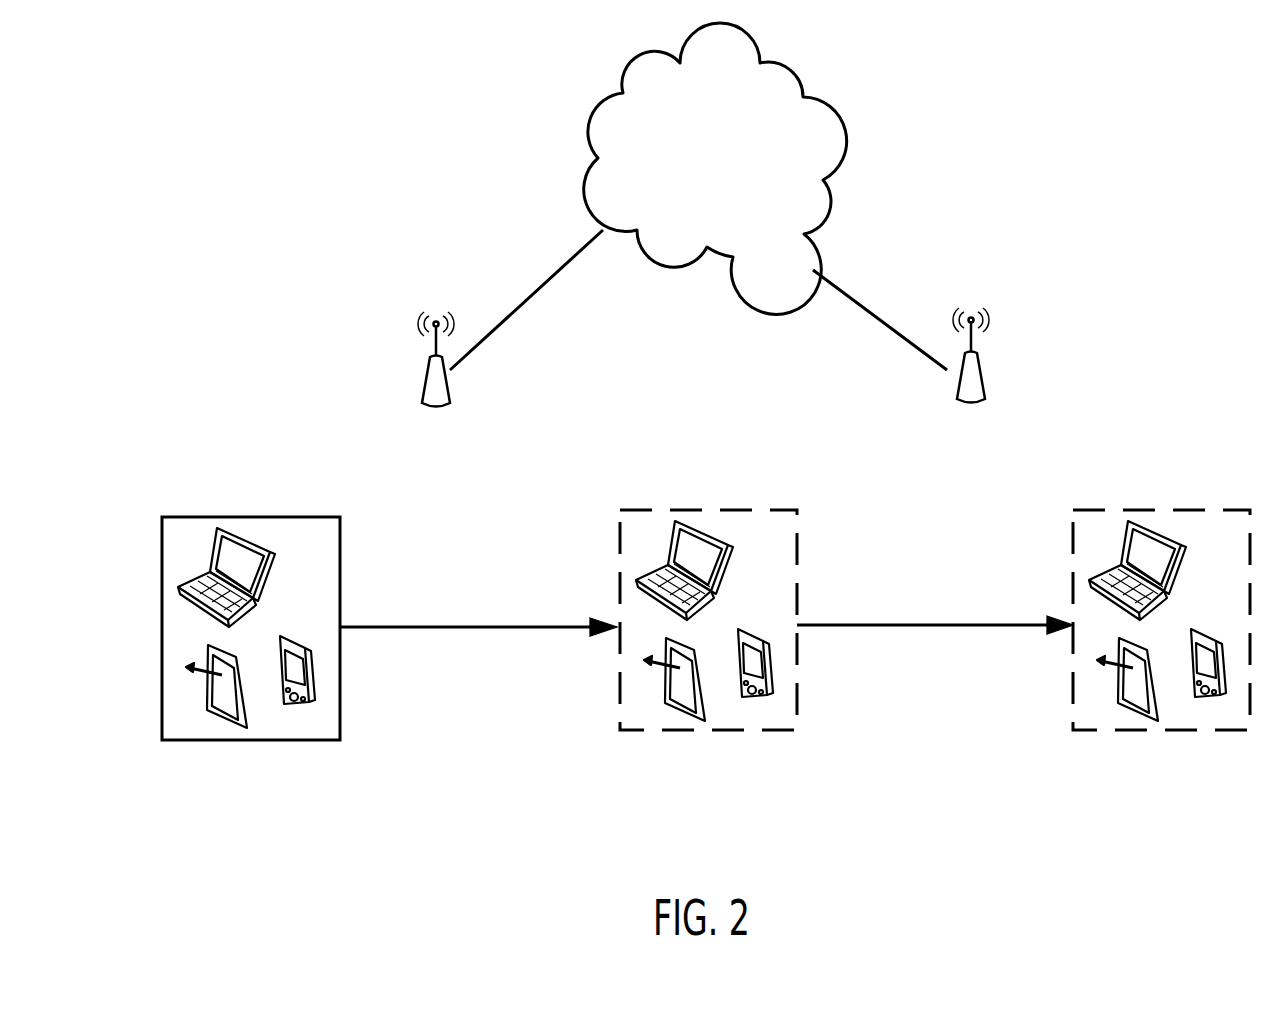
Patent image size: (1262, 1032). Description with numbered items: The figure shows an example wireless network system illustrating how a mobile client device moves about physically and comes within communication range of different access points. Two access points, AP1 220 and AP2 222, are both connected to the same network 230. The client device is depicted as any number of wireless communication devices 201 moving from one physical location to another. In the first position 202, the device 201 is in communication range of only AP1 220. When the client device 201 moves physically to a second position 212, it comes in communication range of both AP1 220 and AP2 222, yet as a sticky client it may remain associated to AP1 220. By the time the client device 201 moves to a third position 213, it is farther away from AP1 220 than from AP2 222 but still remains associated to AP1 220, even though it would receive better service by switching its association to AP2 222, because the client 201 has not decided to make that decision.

The wireless communication devices 201 is at (193, 617).
The first position 202 is at (212, 683).
The second position 212 is at (718, 730).
The third position 213 is at (1163, 730).
The AP1 220 is at (423, 405).
The AP2 222 is at (958, 403).
The network 230 is at (715, 168).